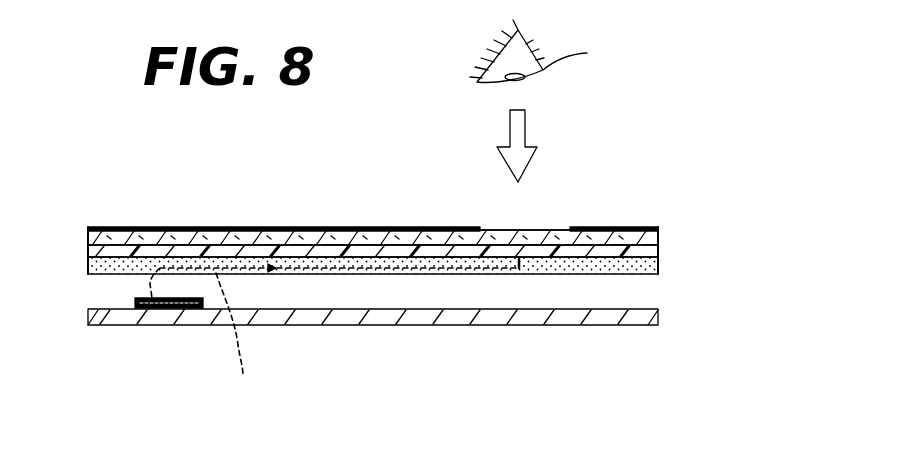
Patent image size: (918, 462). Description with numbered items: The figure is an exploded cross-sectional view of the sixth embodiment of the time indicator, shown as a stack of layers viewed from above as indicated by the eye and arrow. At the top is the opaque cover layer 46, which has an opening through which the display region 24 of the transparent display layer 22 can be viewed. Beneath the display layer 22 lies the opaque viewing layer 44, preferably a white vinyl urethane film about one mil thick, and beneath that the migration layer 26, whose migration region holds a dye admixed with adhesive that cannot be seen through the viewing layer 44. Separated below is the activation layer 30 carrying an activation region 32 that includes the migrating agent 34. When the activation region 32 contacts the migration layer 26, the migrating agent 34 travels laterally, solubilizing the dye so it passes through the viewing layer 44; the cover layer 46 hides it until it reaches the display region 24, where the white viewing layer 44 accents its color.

The display layer 22 is at (431, 223).
The display region 24 is at (523, 230).
The migration layer 26 is at (653, 275).
The activation layer 30 is at (598, 325).
The activation region 32 is at (145, 298).
The migrating agent 34 is at (238, 338).
The opaque viewing layer 44 is at (658, 253).
The opaque cover layer 46 is at (632, 228).